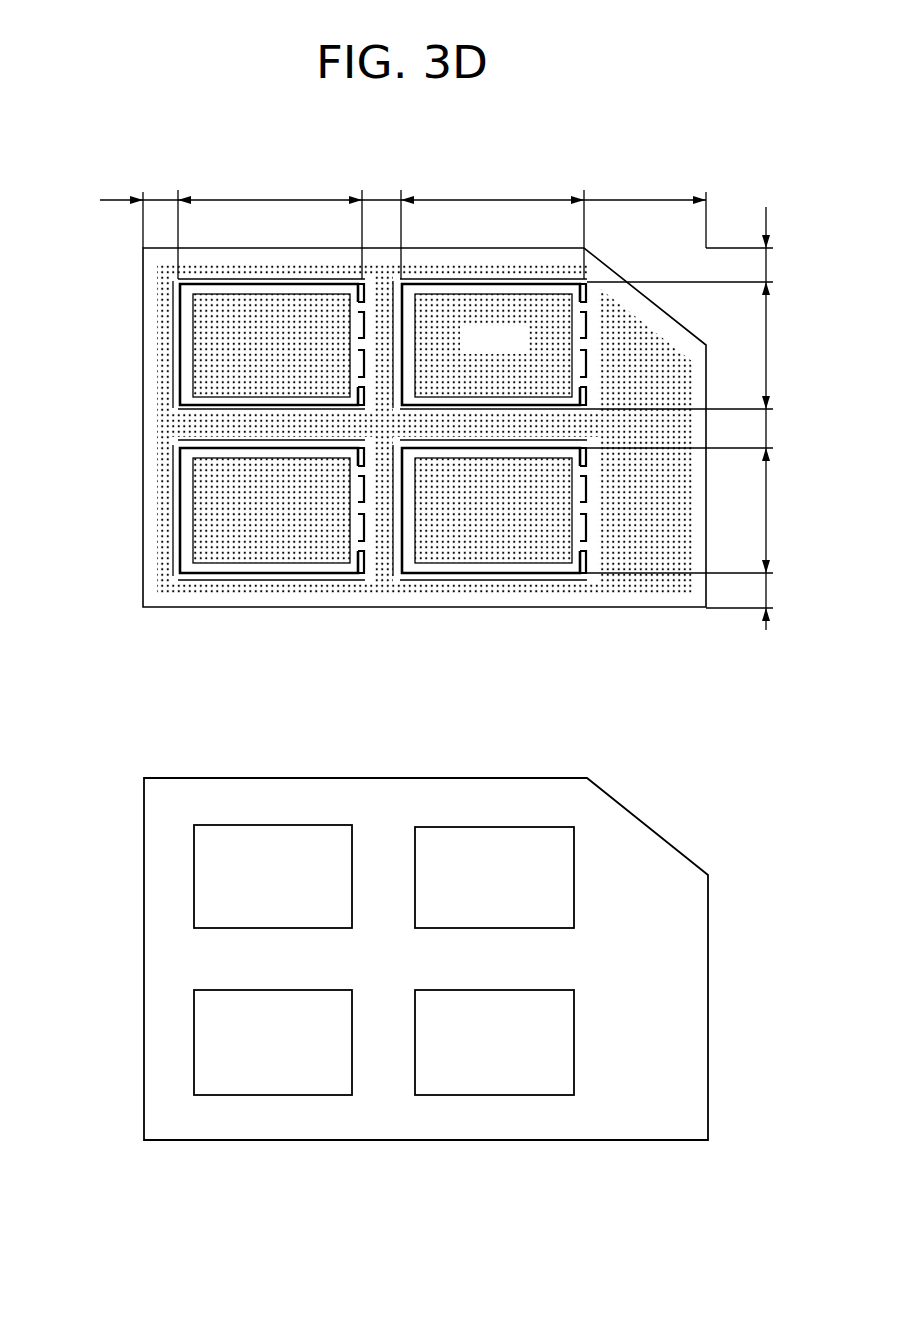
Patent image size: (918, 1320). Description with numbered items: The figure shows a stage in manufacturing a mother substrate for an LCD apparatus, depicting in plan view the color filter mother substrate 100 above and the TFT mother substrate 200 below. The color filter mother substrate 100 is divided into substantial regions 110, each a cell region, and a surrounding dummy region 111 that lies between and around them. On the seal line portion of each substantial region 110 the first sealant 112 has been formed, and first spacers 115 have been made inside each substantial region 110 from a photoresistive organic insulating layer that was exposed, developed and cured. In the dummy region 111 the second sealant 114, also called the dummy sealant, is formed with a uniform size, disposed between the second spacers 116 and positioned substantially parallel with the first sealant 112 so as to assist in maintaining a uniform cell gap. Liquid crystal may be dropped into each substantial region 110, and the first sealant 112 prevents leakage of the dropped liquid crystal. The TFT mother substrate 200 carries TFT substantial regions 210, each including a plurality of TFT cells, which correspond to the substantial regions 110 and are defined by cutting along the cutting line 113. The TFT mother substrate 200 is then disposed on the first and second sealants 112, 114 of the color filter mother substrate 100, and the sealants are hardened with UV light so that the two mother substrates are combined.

The color filter mother substrate 100 is at (362, 136).
The substantial region 110 is at (459, 347).
The dummy region 111 is at (478, 397).
The first sealant 112 is at (182, 368).
The cutting line 113 is at (178, 388).
The second sealant 114 is at (173, 284).
The first spacers 115 is at (203, 328).
The second spacers 116 is at (160, 263).
The TFT mother substrate 200 is at (362, 741).
The TFT substantial regions 210 is at (203, 875).